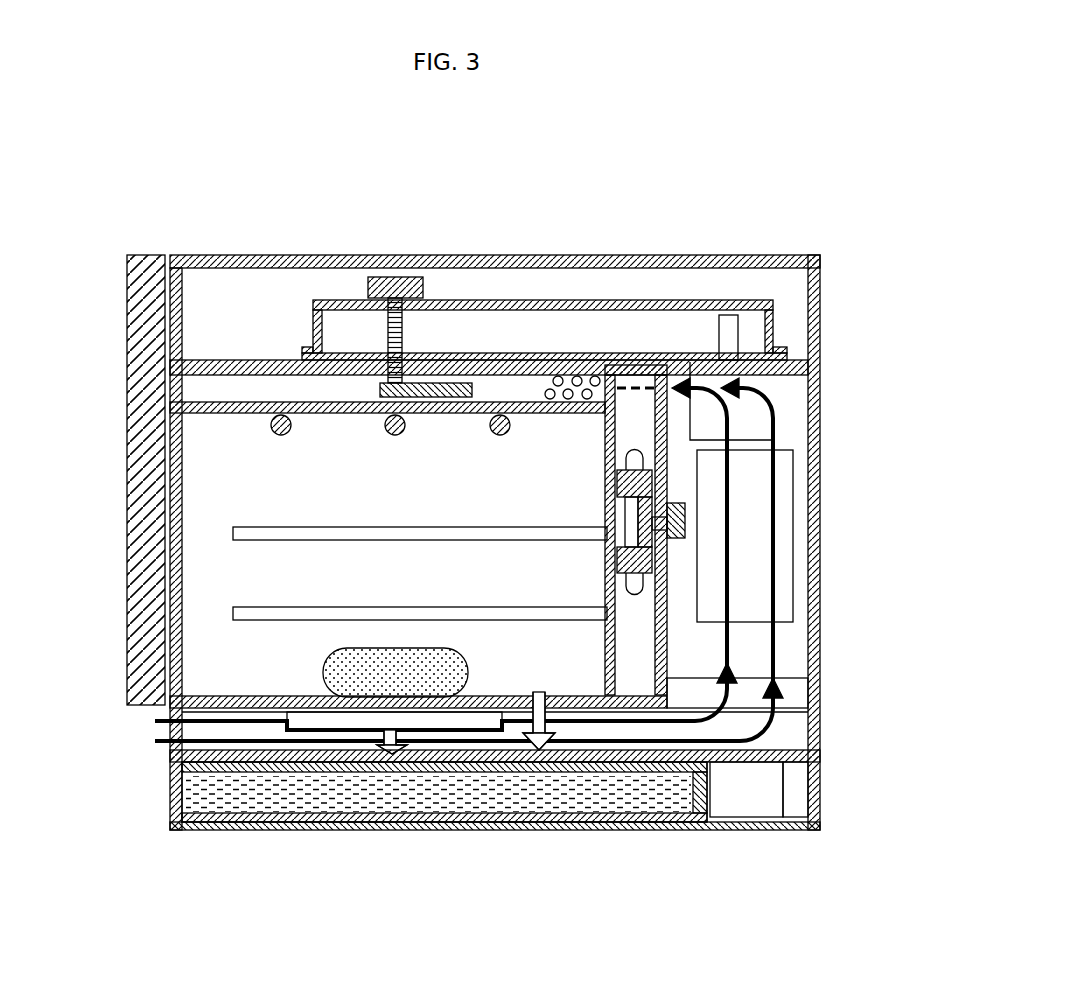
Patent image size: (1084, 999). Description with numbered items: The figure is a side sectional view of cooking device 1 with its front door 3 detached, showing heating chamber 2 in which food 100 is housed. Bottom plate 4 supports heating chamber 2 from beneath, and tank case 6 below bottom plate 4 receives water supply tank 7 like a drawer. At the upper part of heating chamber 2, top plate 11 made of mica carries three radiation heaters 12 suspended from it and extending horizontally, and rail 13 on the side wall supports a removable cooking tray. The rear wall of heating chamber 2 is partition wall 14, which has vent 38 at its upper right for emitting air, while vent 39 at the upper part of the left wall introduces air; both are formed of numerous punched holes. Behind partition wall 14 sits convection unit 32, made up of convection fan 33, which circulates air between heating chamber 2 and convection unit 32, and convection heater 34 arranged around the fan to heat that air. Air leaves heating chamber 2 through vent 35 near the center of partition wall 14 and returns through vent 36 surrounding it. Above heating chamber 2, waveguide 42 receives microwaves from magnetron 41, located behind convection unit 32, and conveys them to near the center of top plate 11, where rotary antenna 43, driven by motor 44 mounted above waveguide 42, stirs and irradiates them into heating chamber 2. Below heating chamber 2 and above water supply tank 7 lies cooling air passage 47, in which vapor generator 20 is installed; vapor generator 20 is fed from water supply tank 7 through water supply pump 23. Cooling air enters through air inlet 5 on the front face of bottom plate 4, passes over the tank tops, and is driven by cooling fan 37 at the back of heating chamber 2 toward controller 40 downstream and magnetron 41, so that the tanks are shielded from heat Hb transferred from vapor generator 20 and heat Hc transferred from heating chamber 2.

The cooking device 1 is at (178, 220).
The heating chamber 2 is at (404, 591).
The door 3 is at (140, 571).
The bottom plate 4 is at (175, 760).
The air inlet 5 is at (178, 700).
The tank case 6 is at (214, 832).
The water supply tank 7 is at (250, 800).
The top plate 11 is at (230, 403).
The radiation heaters 12 is at (270, 428).
The rail 13 is at (275, 532).
The partition wall 14 is at (607, 424).
The vapor generator 20 is at (303, 730).
The water supply pump 23 is at (757, 800).
The convection unit 32 is at (638, 522).
The convection fan 33 is at (655, 483).
The convection heater 34 is at (650, 588).
The vent 35 is at (697, 540).
The vent 36 is at (700, 432).
The cooling fan 37 is at (792, 694).
The vent 38 is at (616, 390).
The vent 39 is at (566, 375).
The controller 40 is at (760, 540).
The magnetron 41 is at (745, 372).
The waveguide 42 is at (757, 330).
The rotary antenna 43 is at (385, 355).
The motor 44 is at (395, 278).
The cooling air passage 47 is at (737, 715).
The food 100 is at (382, 672).
The heat transferred from vapor generator Hb is at (393, 754).
The heat transferred from heating chamber Hc is at (540, 750).